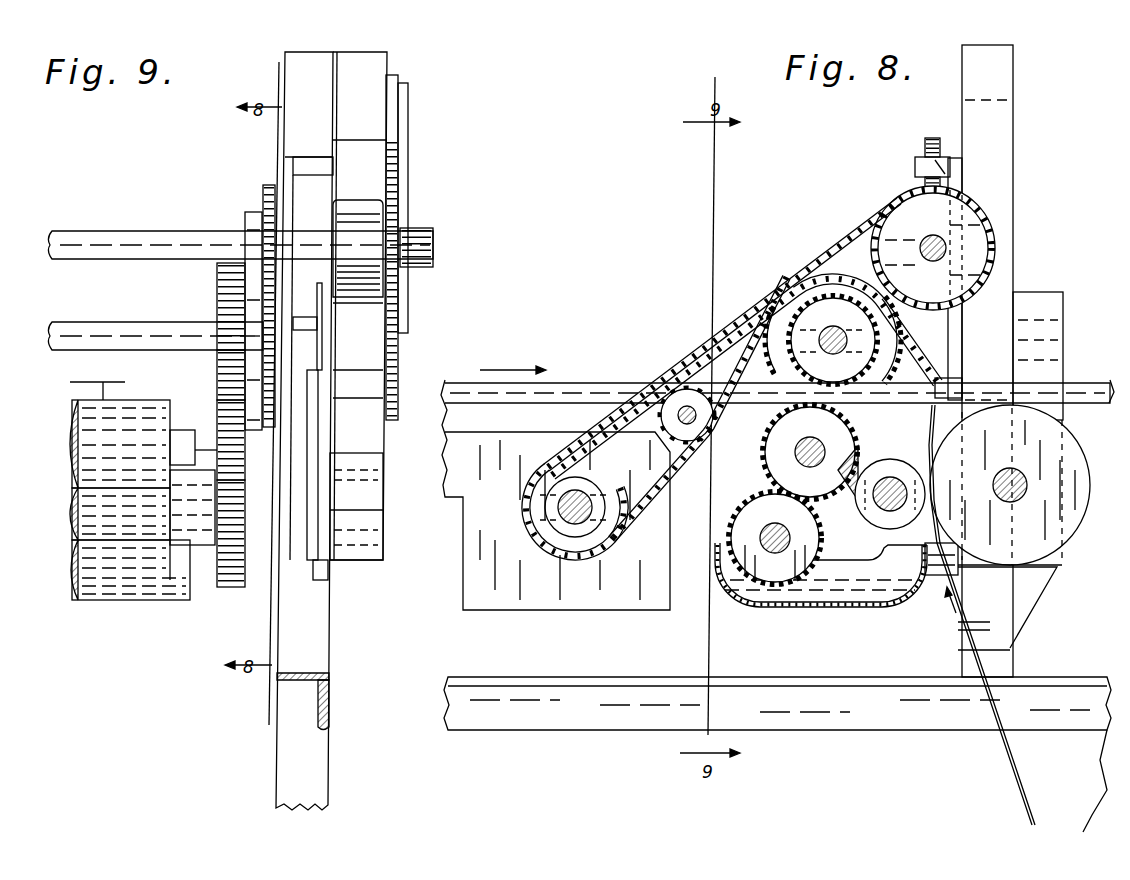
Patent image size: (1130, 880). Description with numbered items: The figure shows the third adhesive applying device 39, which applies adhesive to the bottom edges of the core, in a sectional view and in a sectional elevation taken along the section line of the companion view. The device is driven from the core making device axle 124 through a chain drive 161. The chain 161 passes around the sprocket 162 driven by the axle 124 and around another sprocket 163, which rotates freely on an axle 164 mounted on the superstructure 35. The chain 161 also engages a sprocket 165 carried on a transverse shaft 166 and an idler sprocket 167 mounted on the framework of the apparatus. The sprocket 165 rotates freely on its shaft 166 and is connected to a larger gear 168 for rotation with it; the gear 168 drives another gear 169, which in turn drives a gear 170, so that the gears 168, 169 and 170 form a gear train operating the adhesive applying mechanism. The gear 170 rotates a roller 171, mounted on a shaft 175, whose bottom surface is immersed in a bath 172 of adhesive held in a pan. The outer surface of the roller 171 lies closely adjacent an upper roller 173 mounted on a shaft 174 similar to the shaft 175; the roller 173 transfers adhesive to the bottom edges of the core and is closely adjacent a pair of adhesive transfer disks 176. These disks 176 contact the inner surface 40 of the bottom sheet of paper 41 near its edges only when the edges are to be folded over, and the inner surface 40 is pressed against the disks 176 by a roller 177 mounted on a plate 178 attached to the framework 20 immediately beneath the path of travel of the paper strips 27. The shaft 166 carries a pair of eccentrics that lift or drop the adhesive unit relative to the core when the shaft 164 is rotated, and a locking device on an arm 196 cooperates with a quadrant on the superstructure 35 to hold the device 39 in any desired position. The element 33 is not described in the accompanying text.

In FIG. 9, the framework 20 is at (306, 621).
In FIG. 8, the framework 20 is at (1000, 664).
In FIG. 8, the paper strips 27 is at (979, 399).
In FIG. 8, the shaft 33 is at (1086, 383).
In FIG. 8, the superstructure 35 is at (1004, 82).
In FIG. 8, the third adhesive applying device 39 is at (764, 294).
In FIG. 8, the inner surface 40 is at (958, 624).
In FIG. 8, the sheet of paper 41 is at (1008, 771).
In FIG. 9, the core making device axle 124 is at (208, 445).
In FIG. 8, the core making device axle 124 is at (557, 504).
In FIG. 9, the chain drive 161 is at (266, 342).
In FIG. 8, the chain drive 161 is at (703, 348).
In FIG. 8, the sprocket 162 is at (540, 530).
In FIG. 8, the sprocket 163 is at (976, 236).
In FIG. 9, the axle 164 is at (138, 243).
In FIG. 8, the axle 164 is at (948, 250).
In FIG. 9, the sprocket 165 is at (228, 357).
In FIG. 8, the sprocket 165 is at (880, 338).
In FIG. 9, the transverse shaft 166 is at (112, 334).
In FIG. 8, the transverse shaft 166 is at (830, 330).
In FIG. 8, the idler sprocket 167 is at (662, 381).
In FIG. 9, the larger gear 168 is at (225, 291).
In FIG. 8, the larger gear 168 is at (905, 358).
In FIG. 9, the gear 169 is at (225, 425).
In FIG. 8, the gear 169 is at (852, 420).
In FIG. 9, the gear 170 is at (226, 590).
In FIG. 8, the gear 170 is at (745, 521).
In FIG. 9, the roller 171 is at (95, 516).
In FIG. 8, the roller 171 is at (795, 556).
In FIG. 8, the bath of adhesive 172 is at (826, 570).
In FIG. 9, the upper roller 173 is at (90, 427).
In FIG. 8, the upper roller 173 is at (865, 452).
In FIG. 8, the shaft 174 is at (845, 451).
In FIG. 9, the shaft 175 is at (200, 572).
In FIG. 8, the shaft 175 is at (800, 534).
In FIG. 8, the adhesive transfer disks 176 is at (937, 466).
In FIG. 8, the roller 177 is at (1000, 532).
In FIG. 8, the plate 178 is at (1040, 576).
In FIG. 9, the arm 196 is at (432, 225).